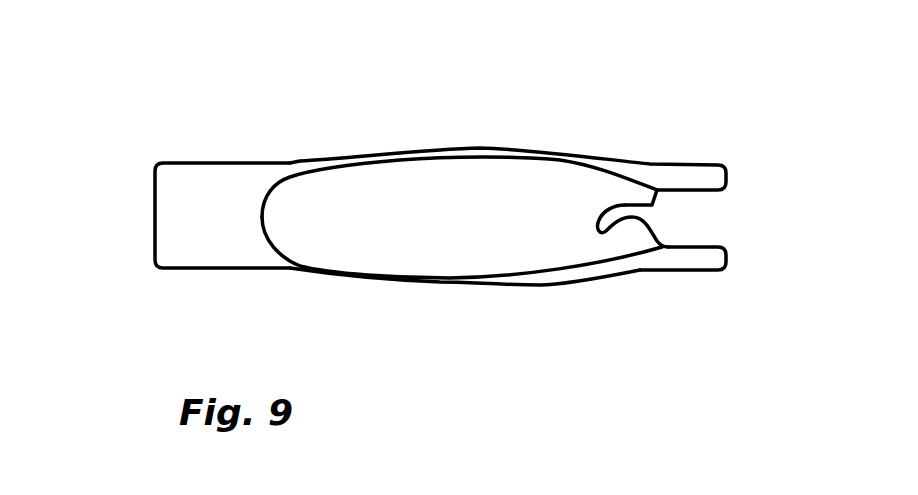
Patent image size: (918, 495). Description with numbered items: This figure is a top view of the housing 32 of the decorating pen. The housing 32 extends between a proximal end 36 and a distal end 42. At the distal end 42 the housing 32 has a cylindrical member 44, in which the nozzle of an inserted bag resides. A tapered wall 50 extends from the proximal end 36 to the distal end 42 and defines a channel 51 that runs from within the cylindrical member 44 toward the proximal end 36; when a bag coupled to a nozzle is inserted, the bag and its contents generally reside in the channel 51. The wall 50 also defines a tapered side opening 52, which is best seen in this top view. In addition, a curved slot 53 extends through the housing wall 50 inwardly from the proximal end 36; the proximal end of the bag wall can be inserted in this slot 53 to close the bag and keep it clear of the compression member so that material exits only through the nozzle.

The distal end 42 is at (140, 292).
The cylindrical member 44 is at (195, 183).
The tapered wall 50 is at (395, 150).
The tapered side opening 52 is at (288, 168).
The channel 51 is at (453, 220).
The slot 53 is at (605, 218).
The proximal end 36 is at (692, 273).
The housing 32 is at (292, 270).